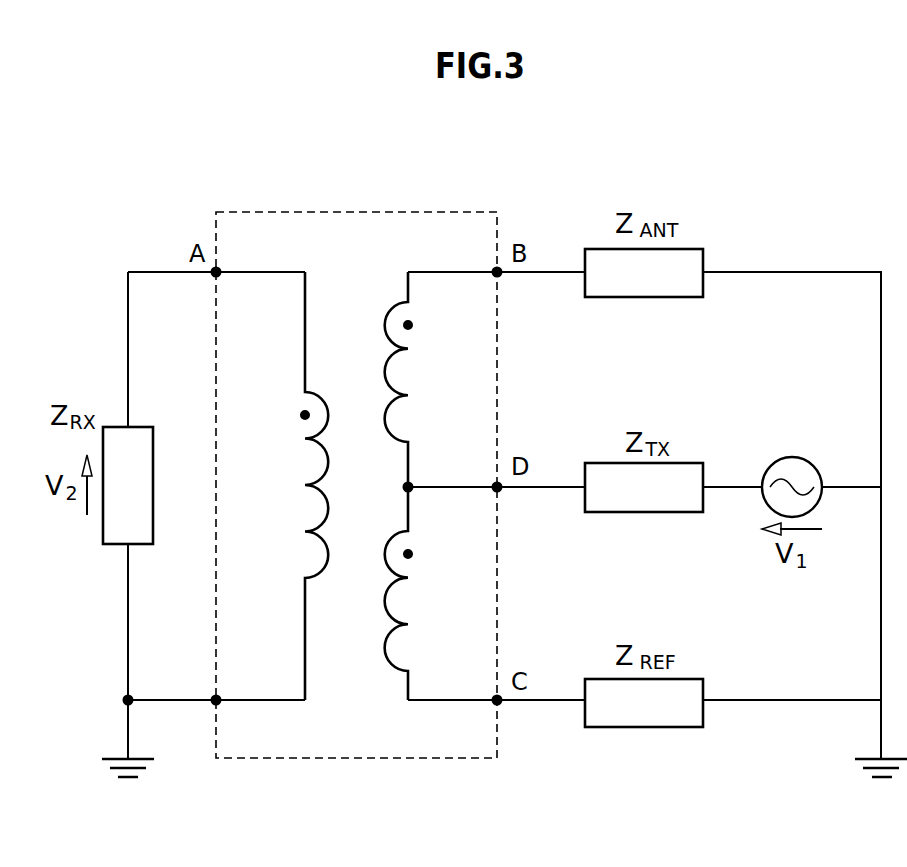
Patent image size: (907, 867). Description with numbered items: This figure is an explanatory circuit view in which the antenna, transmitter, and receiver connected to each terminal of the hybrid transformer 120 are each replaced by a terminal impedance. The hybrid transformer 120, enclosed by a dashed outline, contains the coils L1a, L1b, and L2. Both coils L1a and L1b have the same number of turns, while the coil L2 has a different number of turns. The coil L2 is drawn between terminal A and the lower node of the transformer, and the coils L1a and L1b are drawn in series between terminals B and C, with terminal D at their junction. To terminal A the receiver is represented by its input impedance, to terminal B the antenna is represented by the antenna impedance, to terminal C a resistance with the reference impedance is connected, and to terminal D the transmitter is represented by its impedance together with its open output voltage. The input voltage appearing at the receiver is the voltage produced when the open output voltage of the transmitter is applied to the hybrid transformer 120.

The hybrid transformer 120 is at (418, 457).
The coil L1a is at (378, 327).
The coil L1b is at (377, 646).
The coil L2 is at (328, 484).